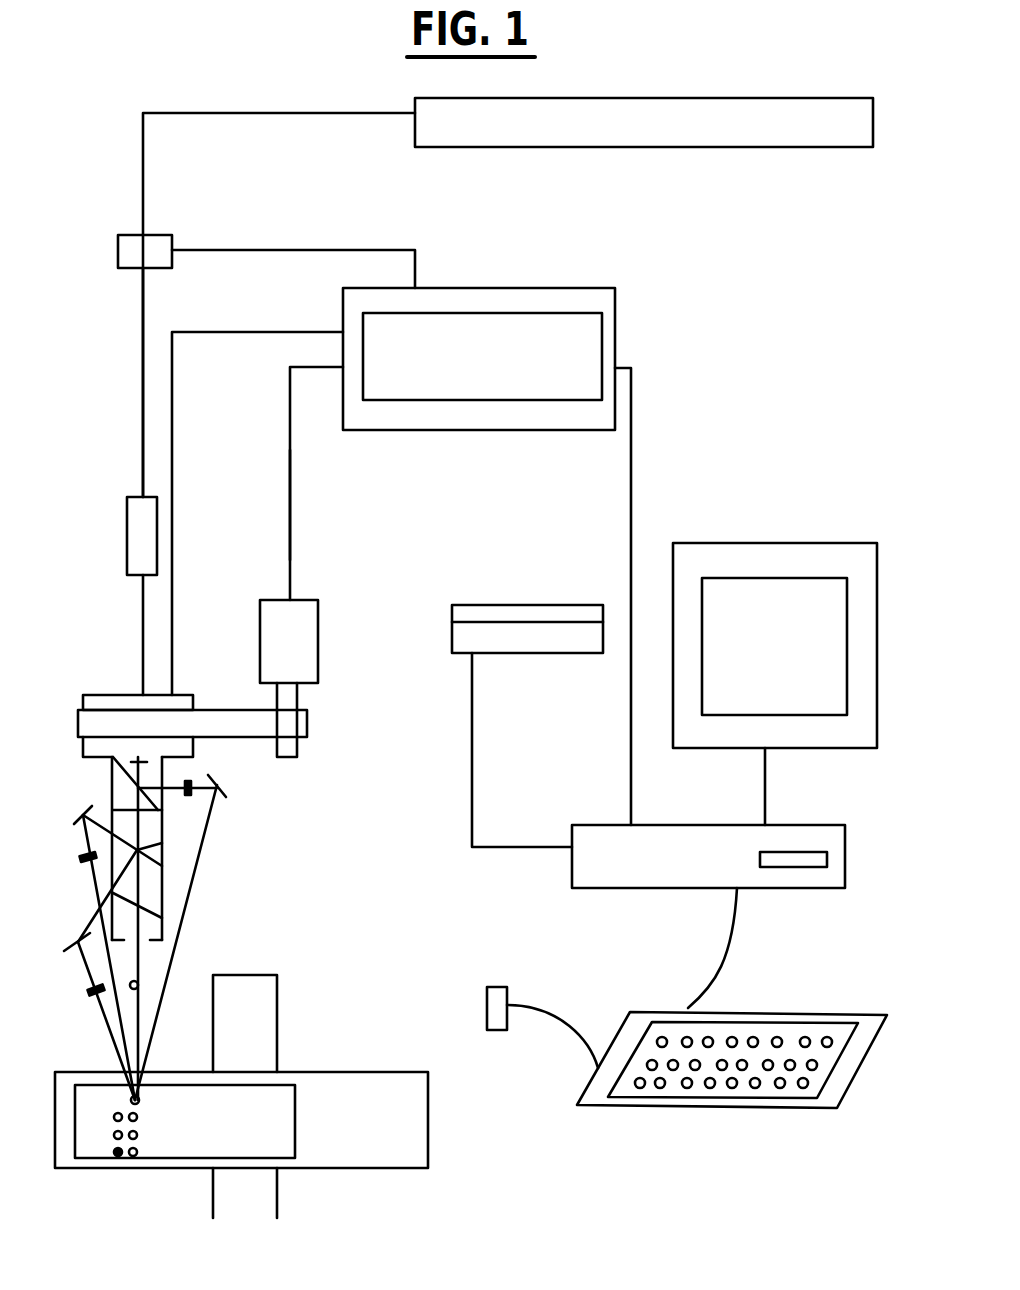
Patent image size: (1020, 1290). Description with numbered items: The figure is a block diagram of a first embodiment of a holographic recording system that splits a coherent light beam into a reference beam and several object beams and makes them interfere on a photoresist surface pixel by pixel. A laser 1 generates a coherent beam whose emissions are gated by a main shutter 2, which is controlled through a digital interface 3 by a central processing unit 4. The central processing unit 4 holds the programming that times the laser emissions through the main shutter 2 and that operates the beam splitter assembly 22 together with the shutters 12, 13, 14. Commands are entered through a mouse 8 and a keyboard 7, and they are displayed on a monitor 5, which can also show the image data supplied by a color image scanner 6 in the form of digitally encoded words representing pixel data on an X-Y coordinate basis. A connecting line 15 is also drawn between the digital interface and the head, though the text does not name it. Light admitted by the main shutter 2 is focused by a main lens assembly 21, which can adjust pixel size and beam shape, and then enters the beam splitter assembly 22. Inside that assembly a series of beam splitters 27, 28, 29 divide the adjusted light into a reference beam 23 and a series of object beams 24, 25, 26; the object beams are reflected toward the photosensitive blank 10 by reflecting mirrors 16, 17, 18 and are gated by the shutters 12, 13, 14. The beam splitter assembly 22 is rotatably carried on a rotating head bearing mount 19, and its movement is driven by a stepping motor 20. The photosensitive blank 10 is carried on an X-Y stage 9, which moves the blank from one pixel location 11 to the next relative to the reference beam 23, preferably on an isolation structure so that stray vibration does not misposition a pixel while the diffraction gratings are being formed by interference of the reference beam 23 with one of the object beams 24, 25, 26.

The laser 1 is at (873, 125).
The main shutter 2 is at (147, 250).
The digital interface 3 is at (500, 325).
The central processing unit 4 is at (835, 878).
The monitor 5 is at (767, 585).
The color image scanner 6 is at (527, 625).
The keyboard 7 is at (853, 1073).
The mouse 8 is at (497, 1000).
The X-Y stage 9 is at (318, 1077).
The photosensitive blank 10 is at (177, 1142).
The pixel location 11 is at (122, 1155).
The shutter 12 is at (108, 1044).
The shutter 13 is at (85, 853).
The shutter 14 is at (190, 795).
The signal line 15 is at (285, 500).
The reflecting mirror 16 is at (75, 815).
The reflecting mirror 17 is at (68, 940).
The reflecting mirror 18 is at (222, 783).
The rotating head bearing mount 19 is at (115, 698).
The stepping motor 20 is at (312, 662).
The main lens assembly 21 is at (137, 533).
The beam splitter assembly 22 is at (112, 780).
The reference beam 23 is at (141, 990).
The object beam 24 is at (180, 906).
The object beam 25 is at (106, 1021).
The object beam 26 is at (108, 955).
The beam splitter 27 is at (156, 787).
The beam splitter 28 is at (140, 851).
The beam splitter 29 is at (128, 905).